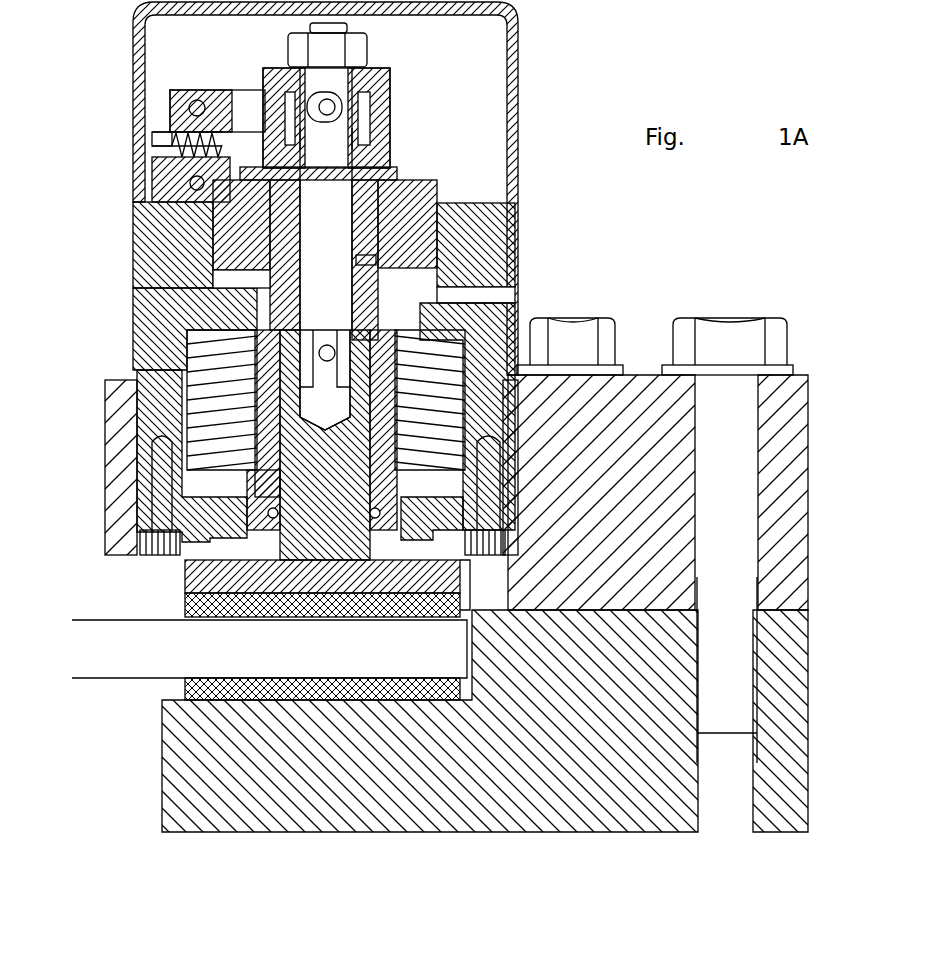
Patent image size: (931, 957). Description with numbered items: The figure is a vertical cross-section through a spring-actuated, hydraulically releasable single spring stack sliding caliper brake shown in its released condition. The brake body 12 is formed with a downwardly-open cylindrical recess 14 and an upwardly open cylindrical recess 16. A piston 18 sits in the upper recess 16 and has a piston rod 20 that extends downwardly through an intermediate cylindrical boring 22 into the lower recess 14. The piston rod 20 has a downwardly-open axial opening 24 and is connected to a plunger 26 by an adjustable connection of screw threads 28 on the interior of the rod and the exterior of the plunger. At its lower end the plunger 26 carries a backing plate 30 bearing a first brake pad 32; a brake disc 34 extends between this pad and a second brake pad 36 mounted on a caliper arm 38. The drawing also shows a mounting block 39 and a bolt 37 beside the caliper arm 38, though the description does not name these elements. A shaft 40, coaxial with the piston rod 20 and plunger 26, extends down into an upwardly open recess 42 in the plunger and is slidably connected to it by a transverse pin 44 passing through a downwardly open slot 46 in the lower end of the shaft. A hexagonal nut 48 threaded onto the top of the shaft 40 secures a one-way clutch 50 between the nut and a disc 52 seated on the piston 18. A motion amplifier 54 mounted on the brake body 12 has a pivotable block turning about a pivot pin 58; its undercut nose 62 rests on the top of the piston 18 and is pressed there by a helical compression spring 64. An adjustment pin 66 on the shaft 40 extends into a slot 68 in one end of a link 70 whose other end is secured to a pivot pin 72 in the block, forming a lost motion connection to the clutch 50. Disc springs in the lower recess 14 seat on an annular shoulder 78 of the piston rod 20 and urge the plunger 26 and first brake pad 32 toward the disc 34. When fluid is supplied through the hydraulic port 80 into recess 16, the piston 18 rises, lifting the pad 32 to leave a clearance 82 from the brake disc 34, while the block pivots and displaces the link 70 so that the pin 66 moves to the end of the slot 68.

The brake body 12 is at (516, 225).
The downwardly-open cylindrical recess 14 is at (200, 485).
The upwardly open cylindrical recess 16 is at (440, 270).
The piston 18 is at (416, 185).
The piston rod 20 is at (358, 260).
The intermediate cylindrical boring 22 is at (362, 326).
The downwardly-open axial opening 24 is at (280, 468).
The plunger 26 is at (333, 507).
The screw threads 28 is at (515, 322).
The backing plate 30 is at (207, 572).
The first brake pad 32 is at (207, 603).
The brake disc 34 is at (341, 662).
The second brake pad 36 is at (207, 688).
The anchor bolt 37 is at (730, 486).
The caliper arm 38 is at (200, 762).
The mounting block 39 is at (637, 415).
The shaft 40 is at (341, 227).
The upwardly open recess 42 is at (285, 393).
The transverse pin 44 is at (327, 353).
The downwardly open slot 46 is at (212, 286).
The hexagonal nut 48 is at (355, 52).
The one-way clutch 50 is at (394, 116).
The disc 52 is at (397, 165).
The motion amplifier 54 is at (148, 90).
The pivot pin 58 is at (194, 184).
The projecting nose 62 is at (214, 170).
The helical compression spring 64 is at (157, 146).
The adjustment pin 66 is at (310, 113).
The slot 68 is at (303, 128).
The link 70 is at (243, 100).
The pivot pin 72 is at (198, 100).
The annular shoulder 78 is at (172, 441).
The hydraulic port 80 is at (470, 291).
The clearance 82 is at (430, 622).